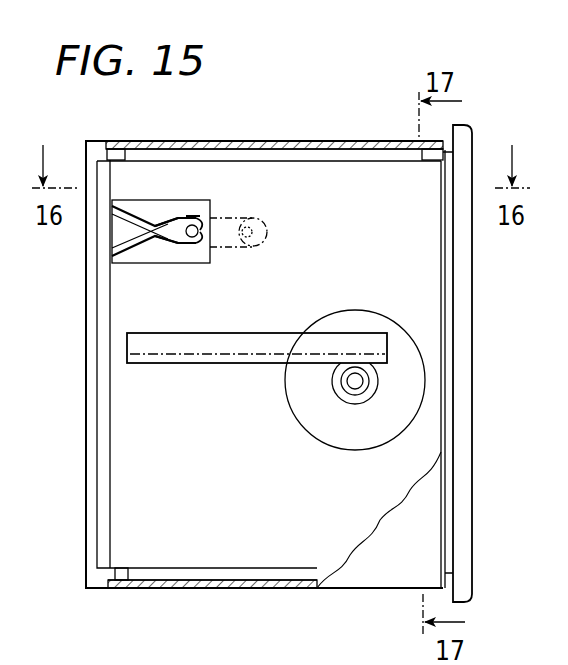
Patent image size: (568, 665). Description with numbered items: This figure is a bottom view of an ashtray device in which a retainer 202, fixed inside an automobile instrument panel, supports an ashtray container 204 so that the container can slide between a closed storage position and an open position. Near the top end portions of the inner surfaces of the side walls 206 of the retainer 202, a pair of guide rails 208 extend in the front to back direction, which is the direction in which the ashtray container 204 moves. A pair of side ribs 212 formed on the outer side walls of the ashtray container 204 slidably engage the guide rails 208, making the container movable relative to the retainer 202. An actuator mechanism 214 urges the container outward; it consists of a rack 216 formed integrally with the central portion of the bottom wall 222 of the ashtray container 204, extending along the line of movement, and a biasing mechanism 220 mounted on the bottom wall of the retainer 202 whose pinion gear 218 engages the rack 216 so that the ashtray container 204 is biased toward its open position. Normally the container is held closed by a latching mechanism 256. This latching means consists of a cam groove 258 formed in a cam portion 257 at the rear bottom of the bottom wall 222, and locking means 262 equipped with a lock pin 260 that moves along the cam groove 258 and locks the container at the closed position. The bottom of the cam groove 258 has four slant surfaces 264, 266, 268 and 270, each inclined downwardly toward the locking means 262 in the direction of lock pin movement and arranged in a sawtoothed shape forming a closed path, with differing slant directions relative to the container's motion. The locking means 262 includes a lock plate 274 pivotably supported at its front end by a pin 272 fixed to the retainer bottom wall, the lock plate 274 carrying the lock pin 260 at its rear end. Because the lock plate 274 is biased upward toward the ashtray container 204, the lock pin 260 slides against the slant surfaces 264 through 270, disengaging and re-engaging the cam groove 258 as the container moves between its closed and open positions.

The retainer 202 is at (312, 594).
The ashtray container 204 is at (484, 390).
The side walls of the retainer 206 is at (245, 141).
The guide rails 208 is at (321, 146).
The side ribs 212 is at (422, 162).
The actuator mechanism 214 is at (258, 398).
The rack 216 is at (197, 357).
The pinion gear 218 is at (343, 391).
The biasing mechanism 220 is at (365, 458).
The bottom wall of the ashtray container 222 is at (414, 253).
The latching mechanism 256 is at (229, 205).
The cam portion 257 is at (150, 262).
The cam groove 258 is at (134, 255).
The lock pin 260 is at (193, 219).
The locking means 262 is at (244, 256).
The slant surface 264 is at (170, 222).
The slant surface 266 is at (188, 217).
The slant surface 268 is at (199, 246).
The slant surface 270 is at (170, 246).
The pin 272 is at (263, 246).
The lock plate 274 is at (258, 222).